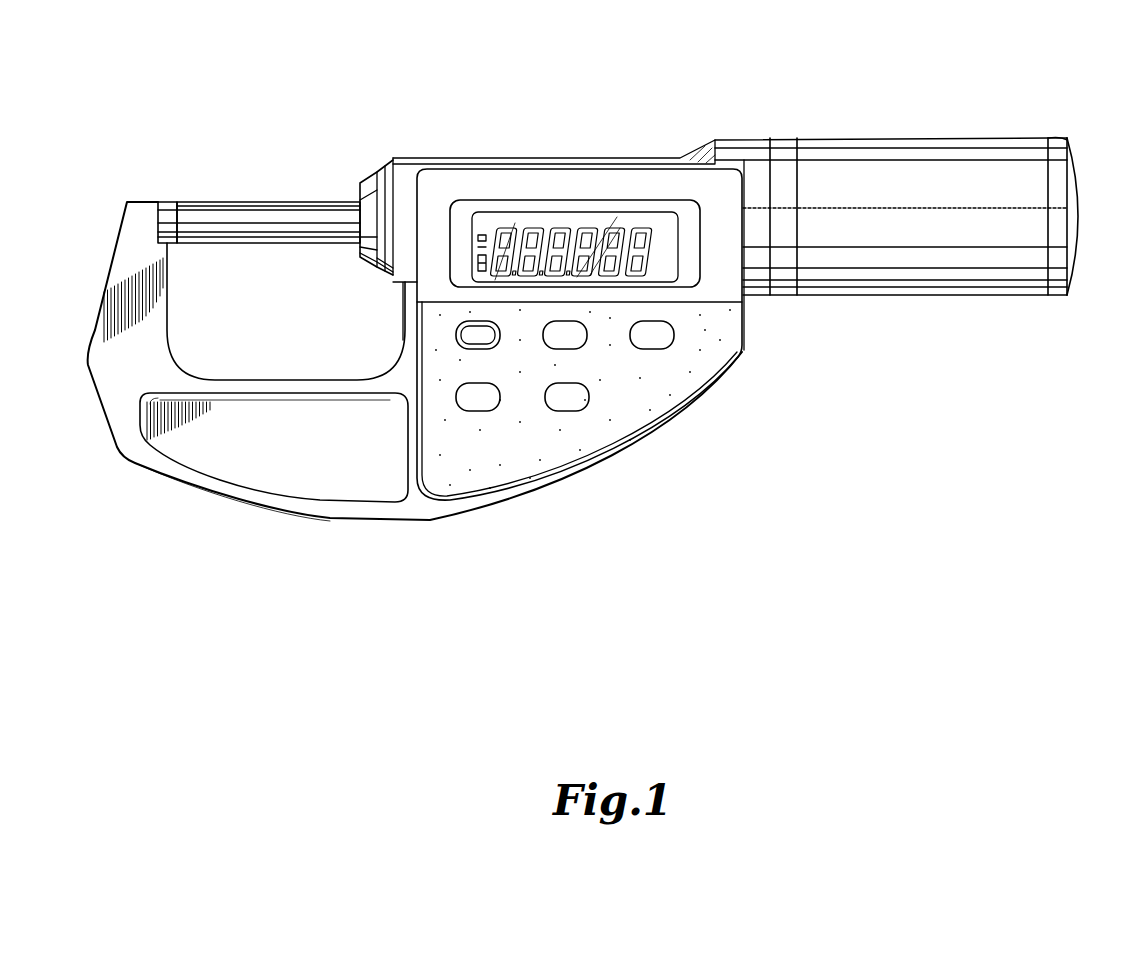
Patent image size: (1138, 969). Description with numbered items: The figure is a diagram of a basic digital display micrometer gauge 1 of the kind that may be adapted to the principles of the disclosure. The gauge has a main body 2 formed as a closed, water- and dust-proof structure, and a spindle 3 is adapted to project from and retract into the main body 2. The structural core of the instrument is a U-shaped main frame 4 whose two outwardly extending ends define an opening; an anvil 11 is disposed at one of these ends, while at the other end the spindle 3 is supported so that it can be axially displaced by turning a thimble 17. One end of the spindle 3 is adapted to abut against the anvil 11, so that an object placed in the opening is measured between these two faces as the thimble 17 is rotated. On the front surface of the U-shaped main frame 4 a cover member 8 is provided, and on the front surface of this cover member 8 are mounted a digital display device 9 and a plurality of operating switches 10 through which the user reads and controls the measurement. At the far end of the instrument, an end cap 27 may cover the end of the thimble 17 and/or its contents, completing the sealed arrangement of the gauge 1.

The digital display micrometer gauge 1 is at (718, 97).
The main body 2 is at (427, 517).
The spindle 3 is at (270, 204).
The U-shaped main frame 4 is at (328, 512).
The cover member 8 is at (705, 354).
The digital display device 9 is at (548, 218).
The operating switches 10 is at (565, 345).
The anvil 11 is at (167, 206).
The thimble 17 is at (920, 153).
The end cap 27 is at (1072, 170).